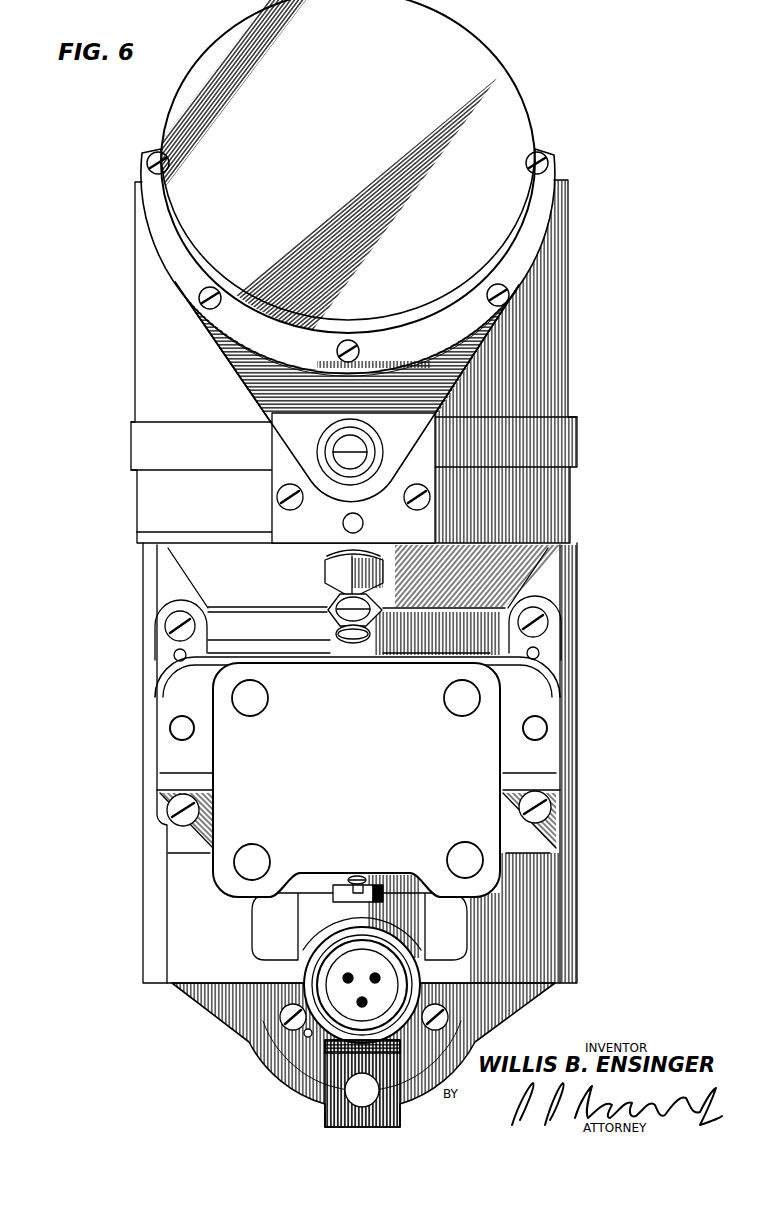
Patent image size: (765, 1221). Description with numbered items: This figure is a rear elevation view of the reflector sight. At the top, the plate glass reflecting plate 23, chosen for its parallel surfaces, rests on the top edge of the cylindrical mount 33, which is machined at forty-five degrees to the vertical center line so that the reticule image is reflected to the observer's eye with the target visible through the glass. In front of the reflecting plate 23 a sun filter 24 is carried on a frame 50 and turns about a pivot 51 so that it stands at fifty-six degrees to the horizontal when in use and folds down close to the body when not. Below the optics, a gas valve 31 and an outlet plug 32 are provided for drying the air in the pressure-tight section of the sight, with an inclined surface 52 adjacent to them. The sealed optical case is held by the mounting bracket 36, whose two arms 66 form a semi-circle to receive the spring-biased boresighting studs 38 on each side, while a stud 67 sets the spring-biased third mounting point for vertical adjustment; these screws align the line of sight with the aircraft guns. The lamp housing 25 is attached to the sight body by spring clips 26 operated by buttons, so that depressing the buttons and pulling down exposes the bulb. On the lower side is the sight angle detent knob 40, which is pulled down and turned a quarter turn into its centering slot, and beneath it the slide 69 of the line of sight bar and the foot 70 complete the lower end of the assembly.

The reflecting plate 23 is at (500, 79).
The sun filter 24 is at (483, 118).
The cylindrical mount 33 is at (167, 313).
The frame 50 is at (265, 385).
The pivot 51 is at (342, 457).
The gas valve 31 is at (327, 583).
The inclined surface 52 is at (510, 588).
The outlet plug 32 is at (345, 637).
The arms 66 is at (177, 692).
The boresighting studs 38 is at (185, 728).
The mounting bracket 36 is at (330, 755).
The stud 67 is at (333, 898).
The lamp housing 25 is at (440, 913).
The spring clips 26 is at (455, 956).
The sight angle detent knob 40 is at (330, 1042).
The slide 69 is at (400, 1104).
The foot 70 is at (330, 1122).